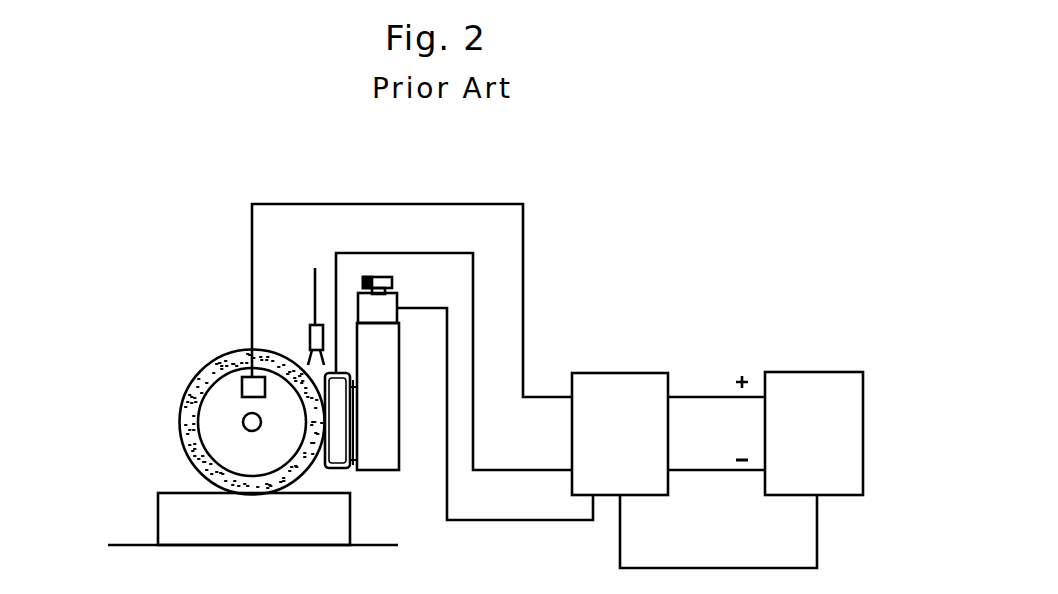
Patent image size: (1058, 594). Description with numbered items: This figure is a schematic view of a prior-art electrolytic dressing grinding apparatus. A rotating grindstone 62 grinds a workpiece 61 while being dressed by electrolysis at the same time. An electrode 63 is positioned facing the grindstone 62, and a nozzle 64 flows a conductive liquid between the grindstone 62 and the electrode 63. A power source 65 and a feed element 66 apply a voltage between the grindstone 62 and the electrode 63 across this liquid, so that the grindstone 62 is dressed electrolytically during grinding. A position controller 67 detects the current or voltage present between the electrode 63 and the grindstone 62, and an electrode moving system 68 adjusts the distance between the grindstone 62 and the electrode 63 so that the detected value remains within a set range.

The workpiece 61 is at (158, 513).
The grindstone 62 is at (198, 382).
The electrode 63 is at (340, 464).
The nozzle 64 is at (310, 333).
The power source 65 is at (805, 375).
The feed element 66 is at (244, 377).
The position controller 67 is at (612, 376).
The electrode moving system 68 is at (399, 444).